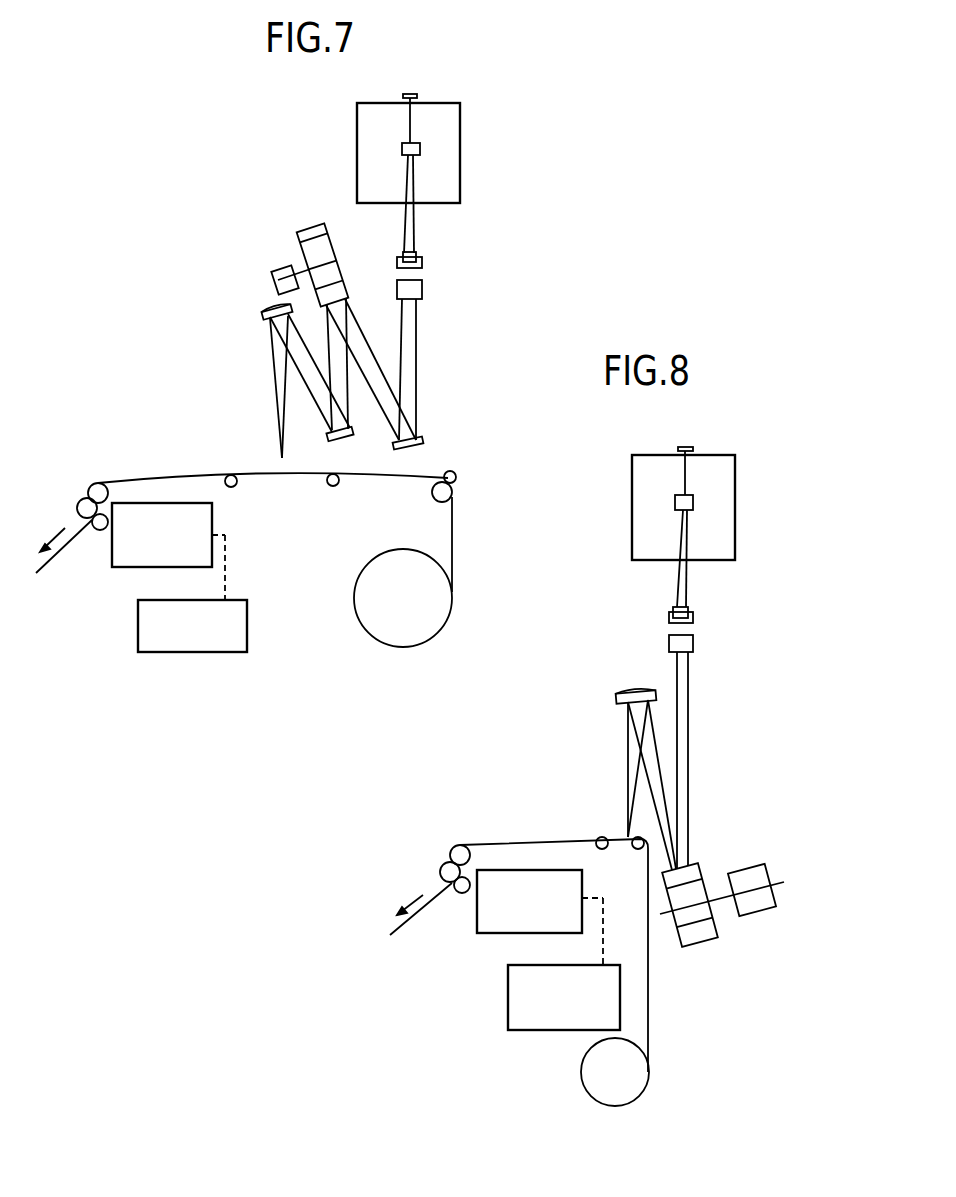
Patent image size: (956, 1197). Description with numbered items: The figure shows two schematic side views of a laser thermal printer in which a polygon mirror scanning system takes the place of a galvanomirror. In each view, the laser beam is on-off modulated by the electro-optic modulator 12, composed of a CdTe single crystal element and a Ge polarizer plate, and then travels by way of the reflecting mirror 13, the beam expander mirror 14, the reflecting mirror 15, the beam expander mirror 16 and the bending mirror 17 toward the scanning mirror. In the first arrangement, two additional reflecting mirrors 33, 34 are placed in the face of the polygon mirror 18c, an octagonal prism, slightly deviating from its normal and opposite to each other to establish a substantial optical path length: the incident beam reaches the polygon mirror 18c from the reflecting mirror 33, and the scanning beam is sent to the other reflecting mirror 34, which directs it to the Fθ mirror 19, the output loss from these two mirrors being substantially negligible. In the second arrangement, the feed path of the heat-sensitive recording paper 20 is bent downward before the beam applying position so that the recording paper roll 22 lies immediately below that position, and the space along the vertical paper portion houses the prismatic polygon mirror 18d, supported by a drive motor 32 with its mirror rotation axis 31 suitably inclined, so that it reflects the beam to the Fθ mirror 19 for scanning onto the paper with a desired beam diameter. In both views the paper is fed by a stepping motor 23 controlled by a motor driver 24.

In FIG. 7, the electro-optic modulator 12 is at (450, 141).
In FIG. 8, the electro-optic modulator 12 is at (726, 493).
In FIG. 7, the reflecting mirror 13 is at (402, 147).
In FIG. 8, the reflecting mirror 13 is at (677, 504).
In FIG. 7, the beam expander mirror 14 is at (408, 92).
In FIG. 8, the beam expander mirror 14 is at (682, 446).
In FIG. 7, the reflecting mirror 15 is at (407, 253).
In FIG. 8, the reflecting mirror 15 is at (681, 609).
In FIG. 7, the beam expander mirror 16 is at (422, 261).
In FIG. 8, the beam expander mirror 16 is at (670, 617).
In FIG. 7, the bending mirror 17 is at (416, 288).
In FIG. 8, the bending mirror 17 is at (690, 646).
In FIG. 7, the polygon mirror 18c is at (307, 230).
In FIG. 8, the polygon mirror 18d is at (690, 950).
In FIG. 7, the Fθ mirror 19 is at (275, 306).
In FIG. 8, the Fθ mirror 19 is at (633, 683).
In FIG. 8, the heat-sensitive recording paper 20 is at (612, 838).
In FIG. 7, the recording paper roll 22 is at (401, 632).
In FIG. 8, the recording paper roll 22 is at (630, 1078).
In FIG. 7, the stepping motor 23 is at (112, 548).
In FIG. 8, the stepping motor 23 is at (488, 937).
In FIG. 7, the motor driver 24 is at (155, 653).
In FIG. 8, the motor driver 24 is at (508, 1012).
In FIG. 8, the mirror rotation axis 31 is at (720, 895).
In FIG. 7, the drive motor 32 is at (276, 268).
In FIG. 8, the drive motor 32 is at (763, 906).
In FIG. 7, the reflecting mirror 33 is at (422, 439).
In FIG. 7, the reflecting mirror 34 is at (350, 438).